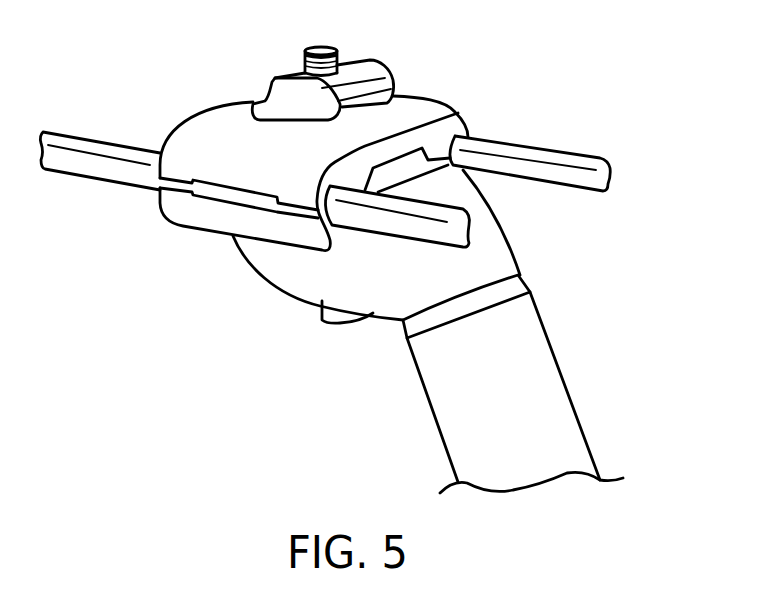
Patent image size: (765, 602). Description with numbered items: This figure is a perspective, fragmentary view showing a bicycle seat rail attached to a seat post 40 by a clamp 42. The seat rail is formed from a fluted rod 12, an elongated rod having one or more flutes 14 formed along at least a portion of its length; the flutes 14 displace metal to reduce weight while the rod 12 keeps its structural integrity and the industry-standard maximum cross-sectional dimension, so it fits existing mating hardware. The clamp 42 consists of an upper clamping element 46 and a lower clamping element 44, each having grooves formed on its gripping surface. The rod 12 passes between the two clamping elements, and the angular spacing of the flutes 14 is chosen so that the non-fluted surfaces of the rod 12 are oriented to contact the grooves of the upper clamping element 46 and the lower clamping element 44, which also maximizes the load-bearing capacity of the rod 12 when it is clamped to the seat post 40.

The fluted rod 12 is at (533, 153).
The flutes 14 is at (63, 162).
The seat post 40 is at (537, 370).
The clamp 42 is at (444, 83).
The lower clamping element 44 is at (233, 222).
The upper clamping element 46 is at (203, 130).